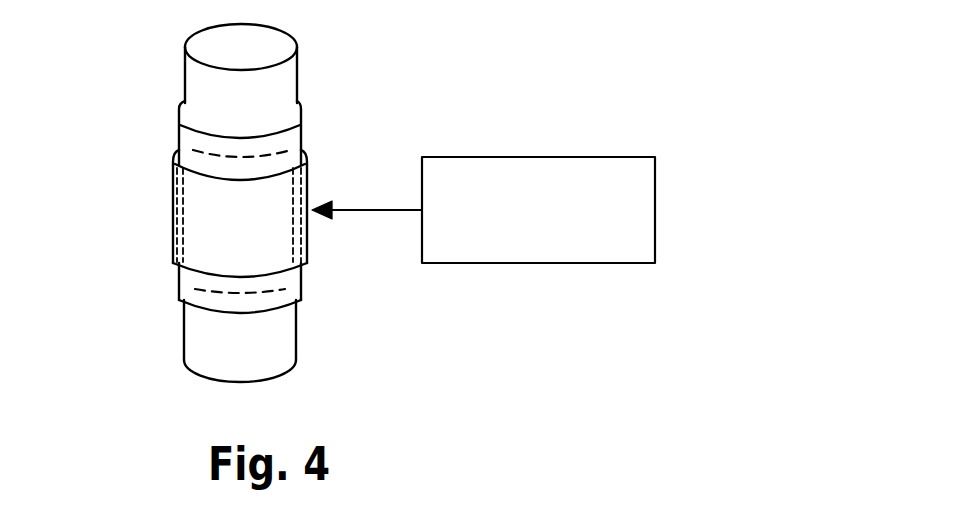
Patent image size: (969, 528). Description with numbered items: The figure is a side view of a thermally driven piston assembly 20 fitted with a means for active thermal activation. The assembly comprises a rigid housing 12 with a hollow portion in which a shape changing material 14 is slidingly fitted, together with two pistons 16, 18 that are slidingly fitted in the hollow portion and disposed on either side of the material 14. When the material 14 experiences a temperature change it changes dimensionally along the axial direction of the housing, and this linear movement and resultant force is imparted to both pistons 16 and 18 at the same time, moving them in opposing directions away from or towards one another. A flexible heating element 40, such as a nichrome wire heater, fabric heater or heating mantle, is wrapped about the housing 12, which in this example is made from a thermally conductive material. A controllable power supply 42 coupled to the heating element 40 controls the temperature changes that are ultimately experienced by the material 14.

The rigid housing 12 is at (288, 140).
The shape changing material 14 is at (257, 172).
The piston 16 is at (277, 77).
The piston 18 is at (193, 347).
The thermally driven piston assembly 20 is at (168, 125).
The flexible heating element 40 is at (170, 218).
The controllable power supply 42 is at (535, 263).